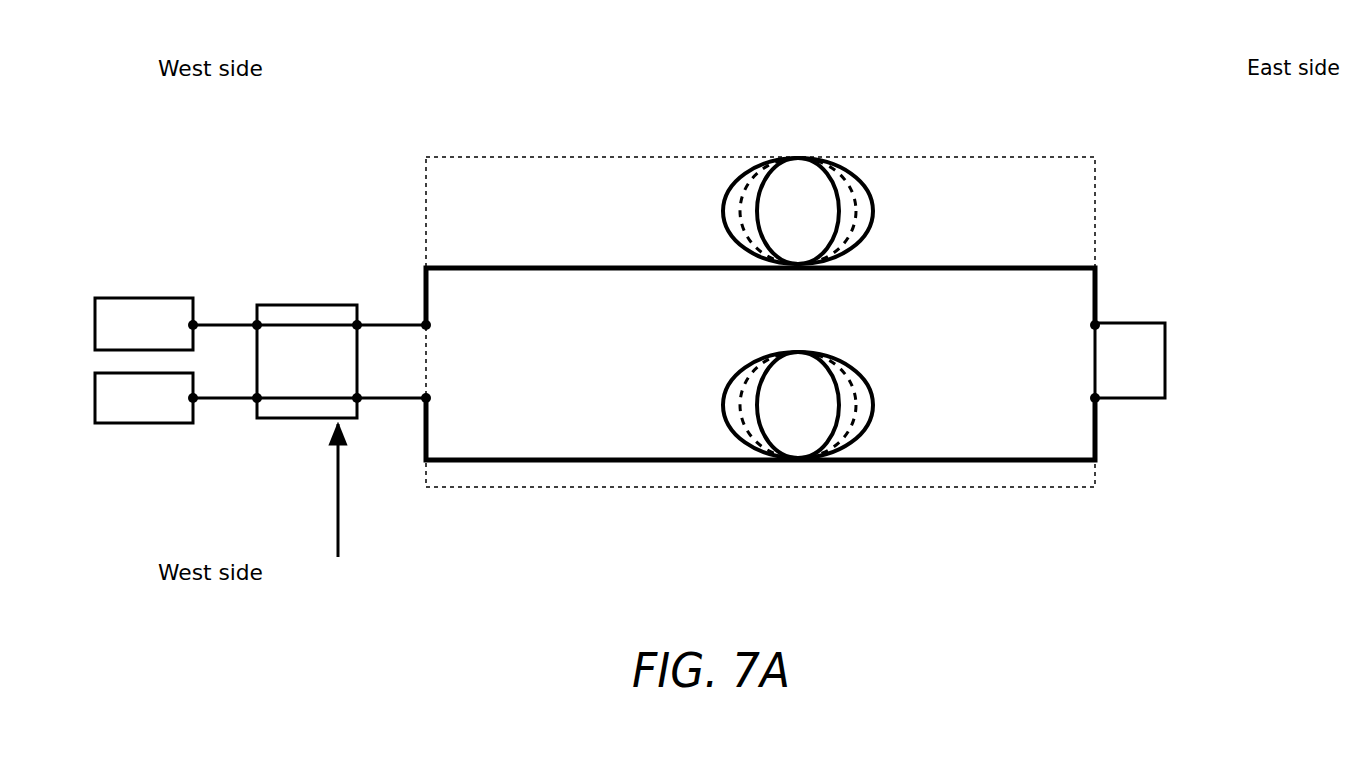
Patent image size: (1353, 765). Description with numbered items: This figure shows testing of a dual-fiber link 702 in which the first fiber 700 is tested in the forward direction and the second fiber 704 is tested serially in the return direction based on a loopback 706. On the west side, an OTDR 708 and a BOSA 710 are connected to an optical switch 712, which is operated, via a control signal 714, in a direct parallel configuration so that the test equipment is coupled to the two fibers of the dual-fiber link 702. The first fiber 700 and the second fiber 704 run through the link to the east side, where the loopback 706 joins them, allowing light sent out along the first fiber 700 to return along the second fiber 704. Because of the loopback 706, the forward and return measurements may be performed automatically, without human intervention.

The first fiber 700 is at (670, 263).
The dual-fiber link 702 is at (423, 232).
The second fiber 704 is at (672, 455).
The loopback 706 is at (1167, 365).
The OTDR 708 is at (137, 292).
The BOSA 710 is at (137, 427).
The optical switch 712 is at (310, 422).
The control signal 714 is at (332, 506).